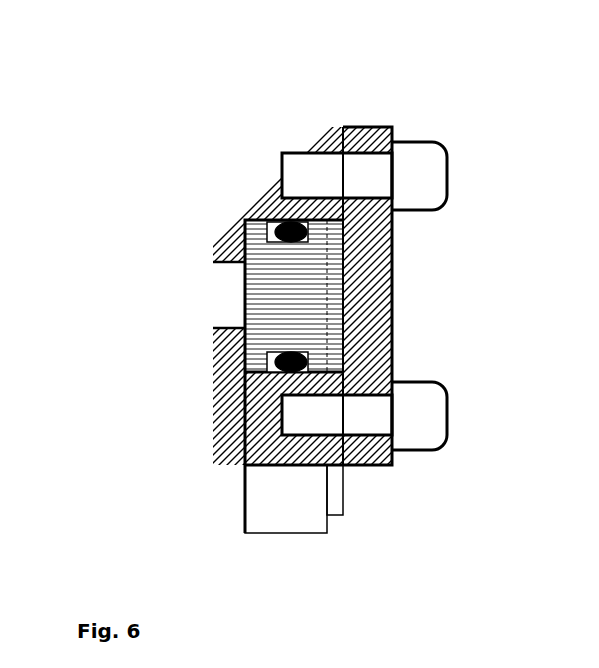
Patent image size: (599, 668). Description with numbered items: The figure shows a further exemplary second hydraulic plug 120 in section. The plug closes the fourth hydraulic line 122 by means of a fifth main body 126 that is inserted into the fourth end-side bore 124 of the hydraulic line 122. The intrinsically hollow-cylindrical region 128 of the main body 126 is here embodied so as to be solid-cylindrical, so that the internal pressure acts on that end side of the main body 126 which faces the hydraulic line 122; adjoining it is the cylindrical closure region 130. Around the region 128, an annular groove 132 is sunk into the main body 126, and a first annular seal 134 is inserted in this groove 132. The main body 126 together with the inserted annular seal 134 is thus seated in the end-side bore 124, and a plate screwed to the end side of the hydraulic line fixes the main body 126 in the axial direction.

The second hydraulic plug 120 is at (193, 418).
The fourth hydraulic line 122 is at (263, 137).
The fourth end-side bore 124 is at (215, 262).
The fifth main body 126 is at (255, 272).
The hollow-cylindrical region 128 is at (285, 533).
The cylindrical closure region 130 is at (333, 515).
The annular groove of the fifth main body 132 is at (280, 228).
The first annular seal of the fifth main body 134 is at (308, 353).